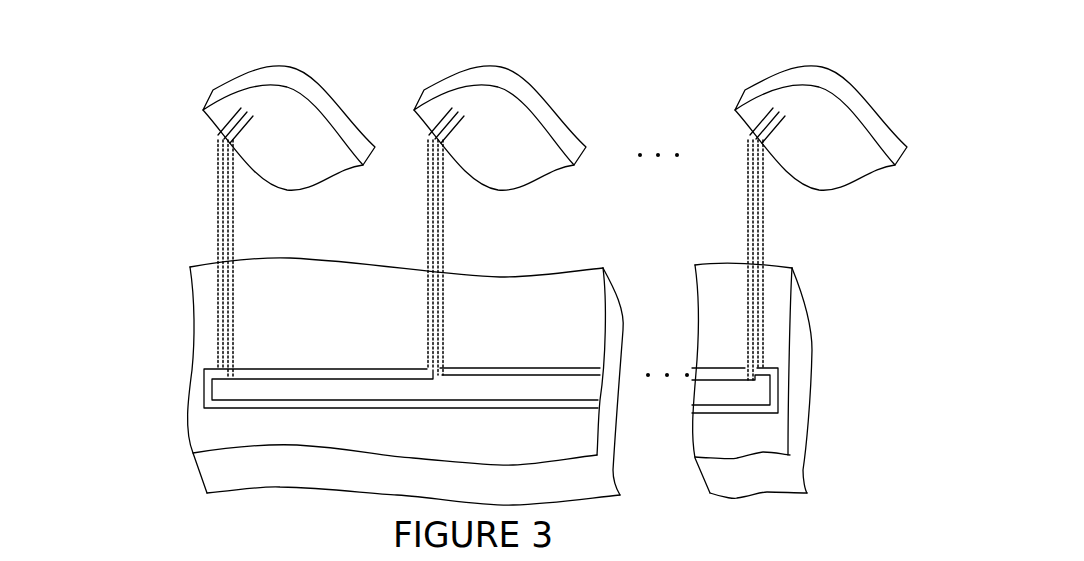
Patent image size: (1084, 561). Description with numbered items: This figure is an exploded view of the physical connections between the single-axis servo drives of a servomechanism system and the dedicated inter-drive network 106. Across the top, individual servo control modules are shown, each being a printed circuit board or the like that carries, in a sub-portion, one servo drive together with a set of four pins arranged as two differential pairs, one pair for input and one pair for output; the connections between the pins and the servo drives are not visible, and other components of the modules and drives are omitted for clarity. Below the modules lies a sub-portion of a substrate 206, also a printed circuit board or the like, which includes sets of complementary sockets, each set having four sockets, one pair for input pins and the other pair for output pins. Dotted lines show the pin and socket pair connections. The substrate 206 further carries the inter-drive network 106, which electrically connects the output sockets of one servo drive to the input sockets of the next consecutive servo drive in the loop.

The substrate 206 is at (190, 267).
The inter-drive network 106 is at (470, 435).